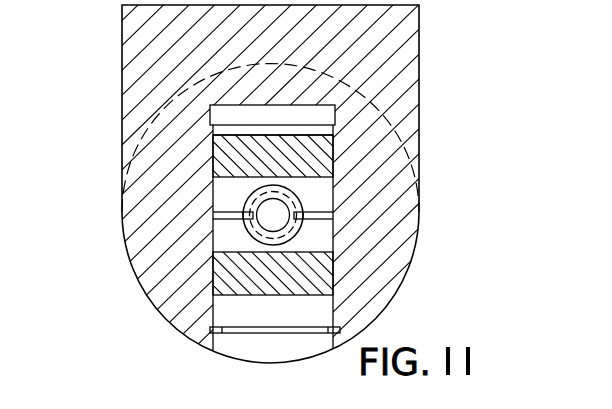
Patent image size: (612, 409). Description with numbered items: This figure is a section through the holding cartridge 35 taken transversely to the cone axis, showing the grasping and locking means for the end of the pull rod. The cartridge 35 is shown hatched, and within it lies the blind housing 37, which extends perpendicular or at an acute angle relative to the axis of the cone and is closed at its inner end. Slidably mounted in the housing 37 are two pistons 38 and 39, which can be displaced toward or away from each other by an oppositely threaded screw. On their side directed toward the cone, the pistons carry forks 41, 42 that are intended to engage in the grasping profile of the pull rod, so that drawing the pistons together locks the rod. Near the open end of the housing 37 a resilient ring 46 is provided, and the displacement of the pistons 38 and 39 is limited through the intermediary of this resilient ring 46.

The holding cartridge 35 is at (132, 83).
The blind housing 37 is at (325, 117).
The piston 38 is at (322, 152).
The piston 39 is at (322, 273).
The fork 41 is at (225, 197).
The fork 42 is at (232, 234).
The resilient ring 46 is at (346, 331).